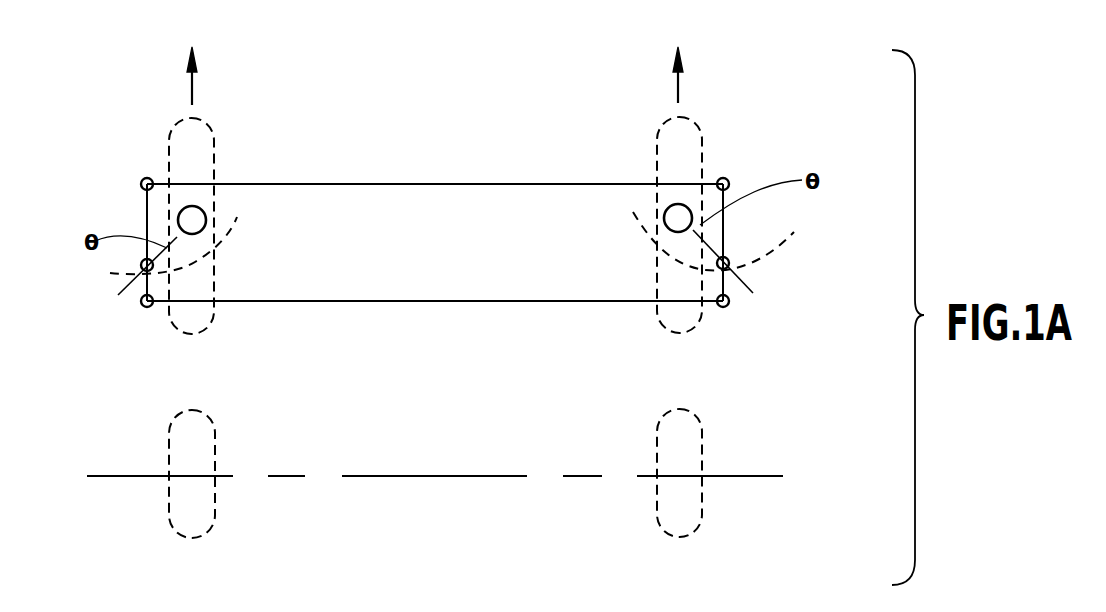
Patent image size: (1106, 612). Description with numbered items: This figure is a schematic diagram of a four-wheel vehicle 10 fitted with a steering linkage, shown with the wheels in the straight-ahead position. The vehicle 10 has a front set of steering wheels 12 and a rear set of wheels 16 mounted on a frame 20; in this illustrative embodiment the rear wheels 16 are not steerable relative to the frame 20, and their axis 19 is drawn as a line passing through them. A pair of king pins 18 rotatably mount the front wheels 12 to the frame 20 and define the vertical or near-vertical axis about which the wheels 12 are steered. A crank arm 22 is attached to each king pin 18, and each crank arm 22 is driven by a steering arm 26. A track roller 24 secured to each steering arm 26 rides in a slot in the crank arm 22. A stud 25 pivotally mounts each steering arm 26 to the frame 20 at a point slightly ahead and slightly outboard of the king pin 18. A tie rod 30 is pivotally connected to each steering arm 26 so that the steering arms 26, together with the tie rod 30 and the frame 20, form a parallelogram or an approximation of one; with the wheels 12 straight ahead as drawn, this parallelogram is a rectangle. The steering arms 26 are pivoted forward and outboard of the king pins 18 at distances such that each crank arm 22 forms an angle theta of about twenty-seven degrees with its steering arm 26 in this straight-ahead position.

The vehicle 10 is at (803, 322).
The front set of steering wheels 12 is at (207, 122).
The rear set of wheels 16 is at (208, 420).
The king pin 18 is at (207, 217).
The axis of wheels 16 19 is at (468, 477).
The frame 20 is at (360, 184).
The crank arm 22 is at (168, 259).
The track roller 24 is at (141, 263).
The stud 25 is at (142, 181).
The steering arm 26 is at (146, 220).
The tie rod 30 is at (473, 301).